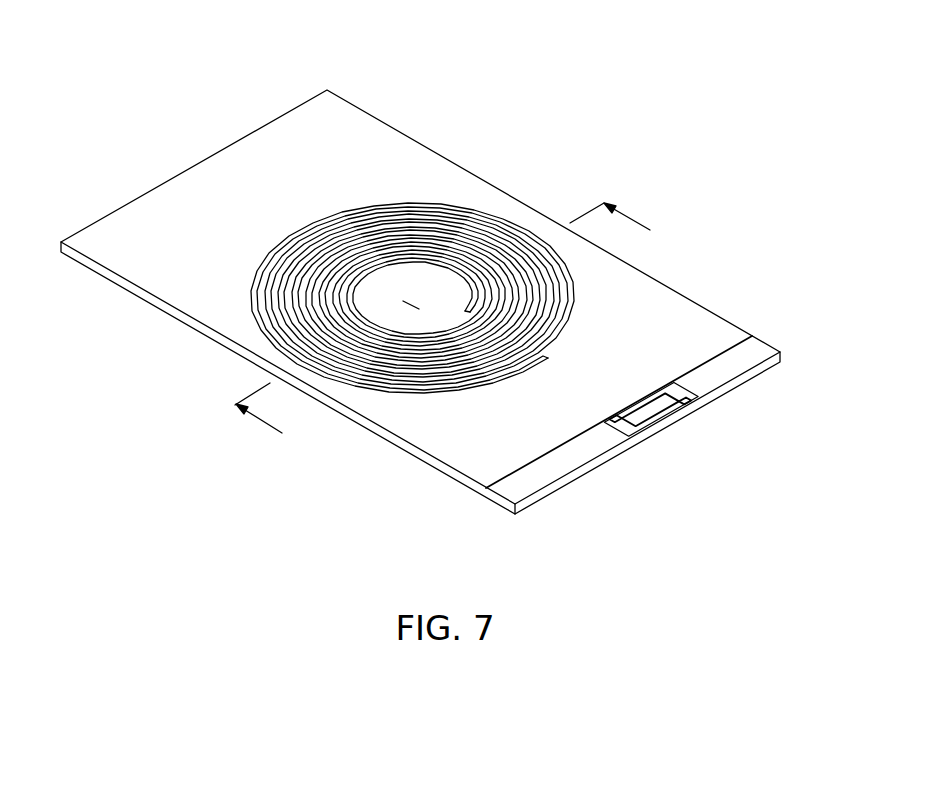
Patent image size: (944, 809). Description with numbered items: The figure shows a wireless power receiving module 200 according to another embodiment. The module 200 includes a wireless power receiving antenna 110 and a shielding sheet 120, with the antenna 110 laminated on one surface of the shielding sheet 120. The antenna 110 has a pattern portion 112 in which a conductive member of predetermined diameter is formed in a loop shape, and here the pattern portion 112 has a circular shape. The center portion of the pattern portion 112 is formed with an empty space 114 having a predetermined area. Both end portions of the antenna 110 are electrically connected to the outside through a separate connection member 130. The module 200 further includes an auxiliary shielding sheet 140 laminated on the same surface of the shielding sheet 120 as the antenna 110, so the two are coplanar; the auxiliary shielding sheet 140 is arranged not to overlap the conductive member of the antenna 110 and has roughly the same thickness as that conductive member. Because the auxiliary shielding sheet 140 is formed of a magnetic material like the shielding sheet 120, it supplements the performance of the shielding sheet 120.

The wireless power receiving module 200 is at (380, 29).
The wireless power receiving antenna 110 is at (474, 192).
The pattern portion 112 is at (415, 200).
The empty space 114 is at (407, 304).
The shielding sheet 120 is at (770, 344).
The connection member 130 is at (693, 388).
The auxiliary shielding sheet 140 is at (692, 316).